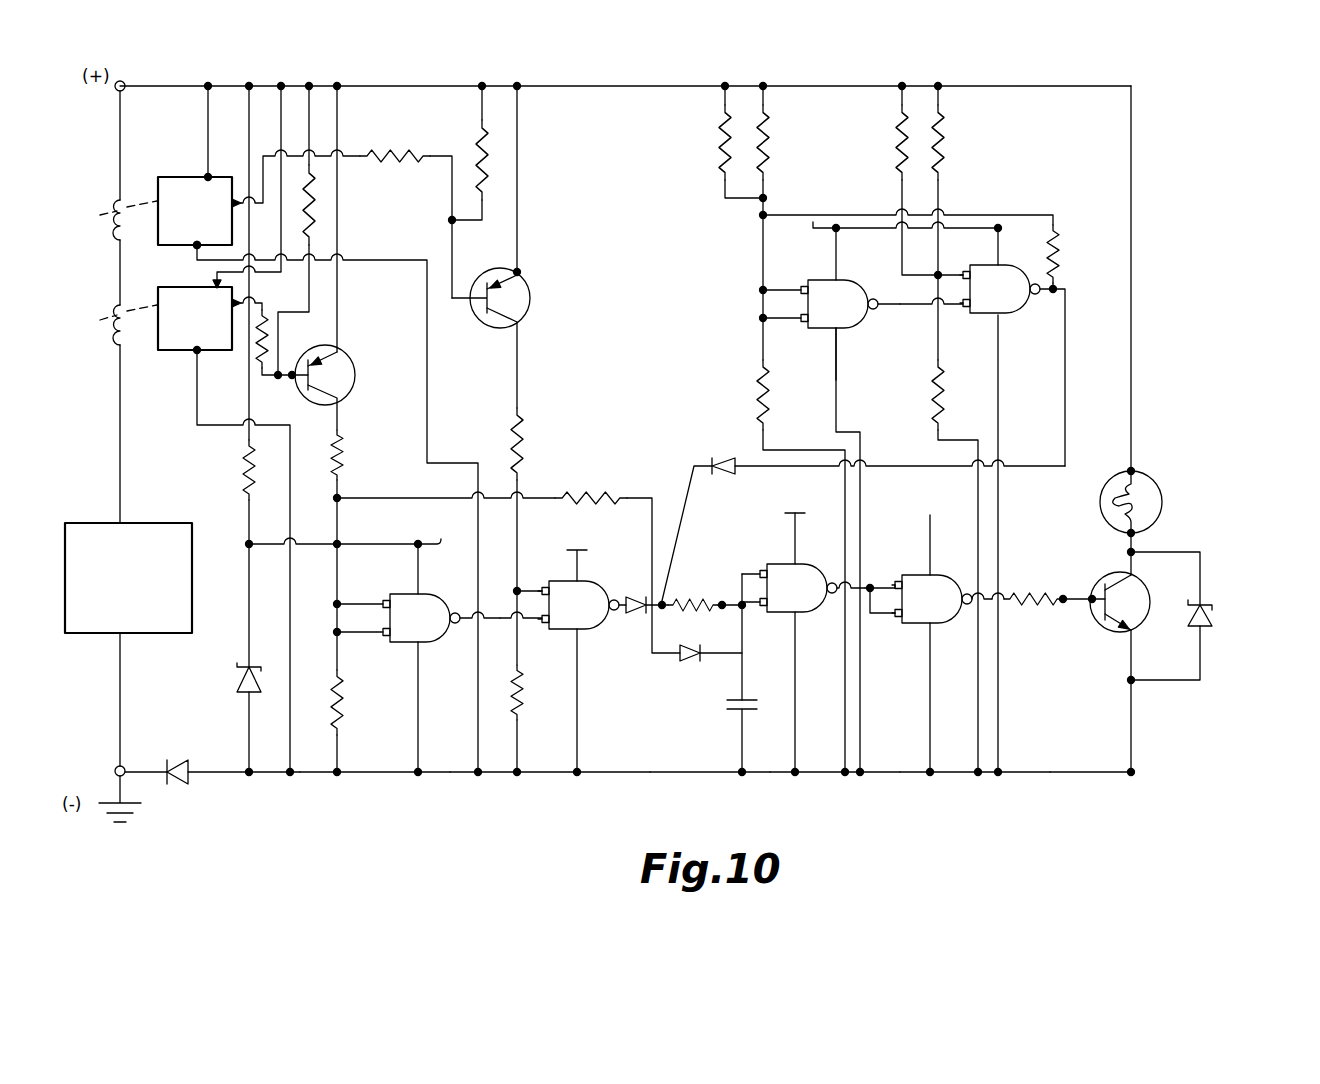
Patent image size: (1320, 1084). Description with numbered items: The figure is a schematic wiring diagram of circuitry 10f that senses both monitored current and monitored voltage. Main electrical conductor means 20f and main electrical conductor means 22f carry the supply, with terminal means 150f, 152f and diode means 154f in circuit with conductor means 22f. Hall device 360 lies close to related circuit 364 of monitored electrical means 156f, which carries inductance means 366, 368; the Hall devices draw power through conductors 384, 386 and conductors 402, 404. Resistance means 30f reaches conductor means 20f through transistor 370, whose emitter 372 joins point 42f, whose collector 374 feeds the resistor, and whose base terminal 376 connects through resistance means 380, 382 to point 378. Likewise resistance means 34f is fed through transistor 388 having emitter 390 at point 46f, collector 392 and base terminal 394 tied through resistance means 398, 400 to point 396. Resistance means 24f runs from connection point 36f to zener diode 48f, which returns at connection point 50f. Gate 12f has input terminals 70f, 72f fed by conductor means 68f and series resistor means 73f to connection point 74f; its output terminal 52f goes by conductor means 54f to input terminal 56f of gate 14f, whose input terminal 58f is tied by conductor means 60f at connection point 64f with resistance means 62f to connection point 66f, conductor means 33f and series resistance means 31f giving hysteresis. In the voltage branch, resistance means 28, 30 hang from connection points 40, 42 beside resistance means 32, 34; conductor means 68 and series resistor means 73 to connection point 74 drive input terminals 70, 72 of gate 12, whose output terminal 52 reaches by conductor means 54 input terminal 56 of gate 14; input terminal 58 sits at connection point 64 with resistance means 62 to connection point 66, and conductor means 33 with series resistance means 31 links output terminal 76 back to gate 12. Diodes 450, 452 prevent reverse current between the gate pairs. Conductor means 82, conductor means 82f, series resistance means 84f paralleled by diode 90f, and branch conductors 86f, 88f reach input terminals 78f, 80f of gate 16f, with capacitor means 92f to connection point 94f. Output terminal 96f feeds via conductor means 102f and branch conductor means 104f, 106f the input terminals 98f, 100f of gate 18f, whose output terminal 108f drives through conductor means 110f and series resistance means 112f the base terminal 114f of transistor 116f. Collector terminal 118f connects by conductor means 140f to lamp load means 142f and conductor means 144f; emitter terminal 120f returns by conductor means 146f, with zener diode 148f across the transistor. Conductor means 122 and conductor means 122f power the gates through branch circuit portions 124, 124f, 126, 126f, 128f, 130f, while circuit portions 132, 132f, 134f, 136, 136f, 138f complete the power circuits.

The circuitry 10f is at (1228, 800).
The gate 12 is at (848, 336).
The gate 12f is at (433, 658).
The gate 14 is at (1020, 321).
The gate 14f is at (598, 636).
The gate 16f is at (813, 640).
The gate 18f is at (938, 632).
The main electrical conductor means 20f is at (608, 88).
The main electrical conductor means 22f is at (1055, 773).
The resistance means 24f is at (246, 468).
The resistance means 28 is at (720, 150).
The resistance means 30 is at (766, 144).
The resistance means 30f is at (342, 452).
The series resistance means 31 is at (1058, 240).
The series resistance means 31f is at (576, 496).
The resistance means 32 is at (898, 144).
The conductor means 33 is at (1002, 214).
The conductor means 33f is at (646, 496).
The resistance means 34 is at (942, 144).
The resistance means 34f is at (521, 428).
The connection point 36f is at (256, 70).
The connection point 40 is at (727, 84).
The connection point 42 is at (765, 84).
The point of conductor 20f 42f is at (339, 84).
The point of conductor 20f 46f is at (519, 86).
The zener diode 48f is at (237, 680).
The connection point 50f is at (250, 776).
The output terminal 52 is at (886, 279).
The output terminal 52f is at (456, 612).
The conductor means 54 is at (906, 308).
The conductor means 54f is at (516, 624).
The input terminal 56 is at (968, 306).
The input terminal 56f is at (546, 625).
The input terminal 58 is at (972, 274).
The input terminal 58f is at (560, 584).
The conductor means 60f is at (545, 590).
The resistance means 62 is at (935, 386).
The resistance means 62f is at (521, 682).
The connection point 64 is at (940, 277).
The connection point 64f is at (517, 588).
The connection point 66 is at (980, 776).
The connection point 66f is at (520, 776).
The conductor means 68 is at (760, 272).
The conductor means 68f is at (337, 656).
The input terminal 70 is at (803, 289).
The input terminal 70f is at (385, 602).
The input terminal 72 is at (805, 322).
The input terminal 72f is at (385, 636).
The series resistor means 73 is at (760, 400).
The series resistor means 73f is at (340, 704).
The connection point 74 is at (848, 776).
The connection point 74f is at (338, 776).
The output terminal 76 is at (1036, 285).
The input terminal 78f is at (790, 574).
The input terminal 80f is at (768, 606).
The conductor means 82 is at (679, 520).
The conductor means 82f is at (702, 610).
The series resistance means 84f is at (736, 600).
The branch conductor 86f is at (763, 571).
The branch conductor 88f is at (795, 640).
The diode 90f is at (690, 662).
The capacitor means 92f is at (739, 712).
The connection point 94f is at (742, 776).
The output terminal 96f is at (833, 586).
The input terminal 98f is at (896, 584).
The input terminal 100f is at (896, 616).
The conductor means 102f is at (870, 585).
The branch conductor means 104f is at (878, 600).
The branch conductor means 106f is at (928, 662).
The output terminal 108f is at (968, 594).
The conductor means 110f is at (996, 596).
The series resistance means 112f is at (1030, 596).
The base terminal 114f is at (1092, 604).
The transistor 116f is at (1151, 602).
The collector terminal 118f is at (1124, 582).
The emitter terminal 120f is at (1127, 634).
The conductor means 122 is at (840, 232).
The conductor means 122f is at (378, 534).
The branch circuit portion 124 is at (813, 230).
The branch circuit portion 124f is at (440, 548).
The branch circuit portion 126 is at (1000, 229).
The branch circuit portion 126f is at (580, 549).
The branch circuit portion 128f is at (802, 512).
The branch circuit portion 130f is at (931, 518).
The circuit portion 132 is at (836, 382).
The circuit portion 132f is at (419, 698).
The circuit portion 134f is at (580, 712).
The circuit portion 136 is at (998, 704).
The circuit portion 136f is at (844, 700).
The circuit portion 138f is at (860, 714).
The conductor means 140f is at (1136, 552).
The electrical load means 142f is at (1166, 502).
The conductor means 144f is at (1135, 412).
The conductor means 146f is at (1135, 734).
The zener diode 148f is at (1216, 618).
The terminal means 150f is at (122, 82).
The terminal means 152f is at (126, 766).
The diode means 154f is at (178, 784).
The monitored electrical means 156f is at (110, 640).
The Hall device 360 is at (201, 180).
The related circuit 364 is at (120, 440).
The inductance means 366 is at (104, 214).
The inductance means 368 is at (112, 312).
The transistor 370 is at (354, 368).
The emitter 372 is at (331, 357).
The collector 374 is at (336, 398).
The base terminal 376 is at (309, 395).
The point of conductor 20f 378 is at (309, 84).
The resistance means 380 is at (312, 224).
The resistance means 382 is at (262, 372).
The conductor 384 is at (284, 132).
The conductor 386 is at (290, 652).
The transistor 388 is at (536, 290).
The emitter 390 is at (516, 270).
The collector 392 is at (520, 318).
The base terminal 394 is at (470, 302).
The point of conductor 20f 396 is at (492, 78).
The resistance means 398 is at (478, 150).
The resistance means 400 is at (398, 156).
The conductor 402 is at (208, 102).
The conductor 404 is at (429, 405).
The diode 450 is at (630, 612).
The diode 452 is at (719, 462).